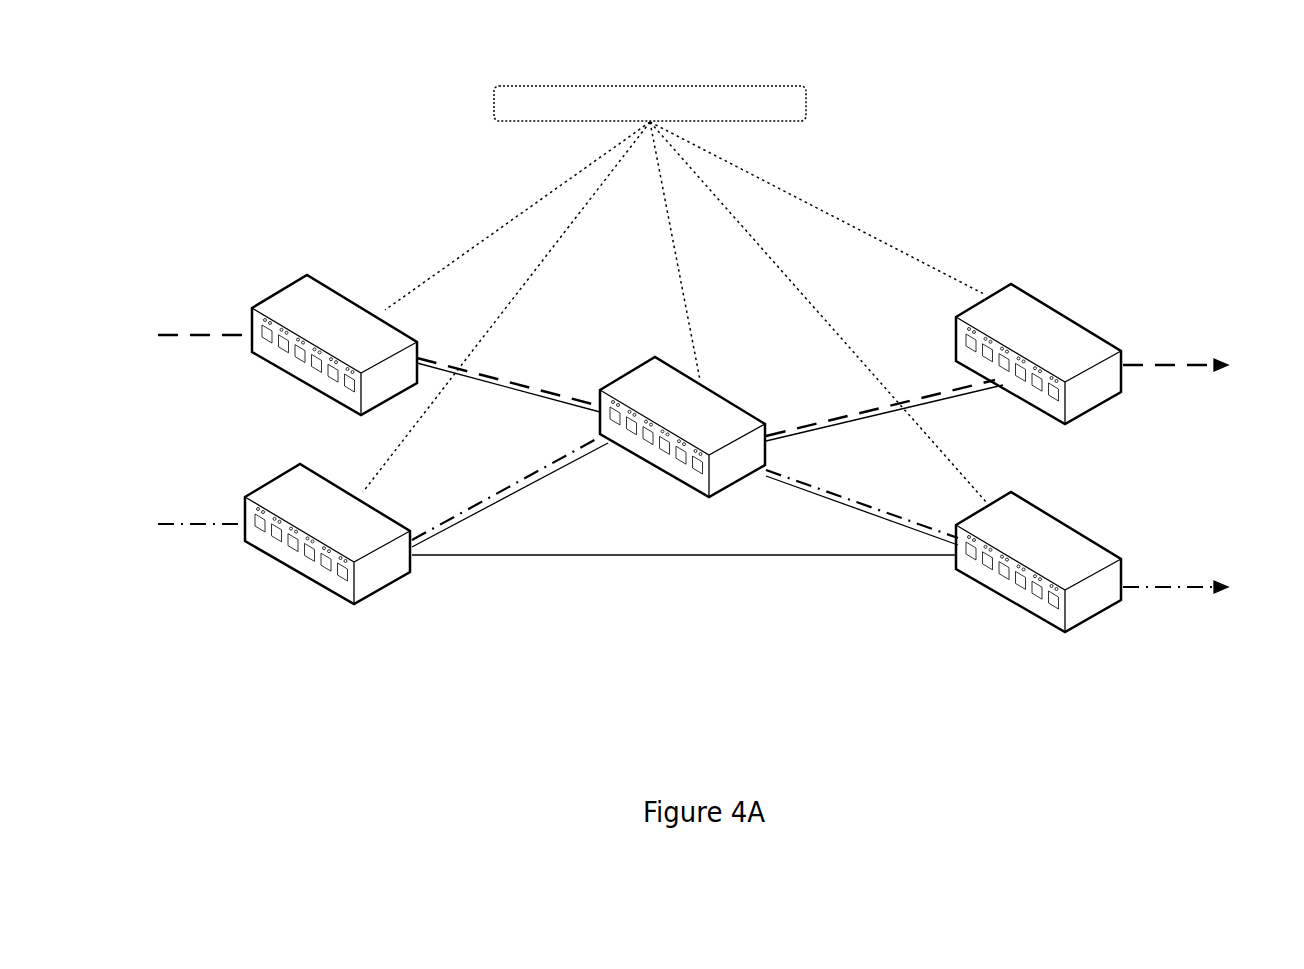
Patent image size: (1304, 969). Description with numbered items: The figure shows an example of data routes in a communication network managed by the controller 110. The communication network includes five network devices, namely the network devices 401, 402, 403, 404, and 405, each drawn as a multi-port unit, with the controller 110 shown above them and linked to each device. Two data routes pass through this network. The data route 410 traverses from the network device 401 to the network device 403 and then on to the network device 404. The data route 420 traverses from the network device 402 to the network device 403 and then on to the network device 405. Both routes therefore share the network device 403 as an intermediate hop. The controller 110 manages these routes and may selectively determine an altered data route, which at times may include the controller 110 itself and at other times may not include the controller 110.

The controller 110 is at (793, 113).
The network device 401 is at (330, 398).
The network device 402 is at (330, 587).
The network device 403 is at (708, 498).
The network device 404 is at (1093, 409).
The network device 405 is at (1093, 619).
The data route 410 is at (1285, 135).
The data route 420 is at (1285, 167).